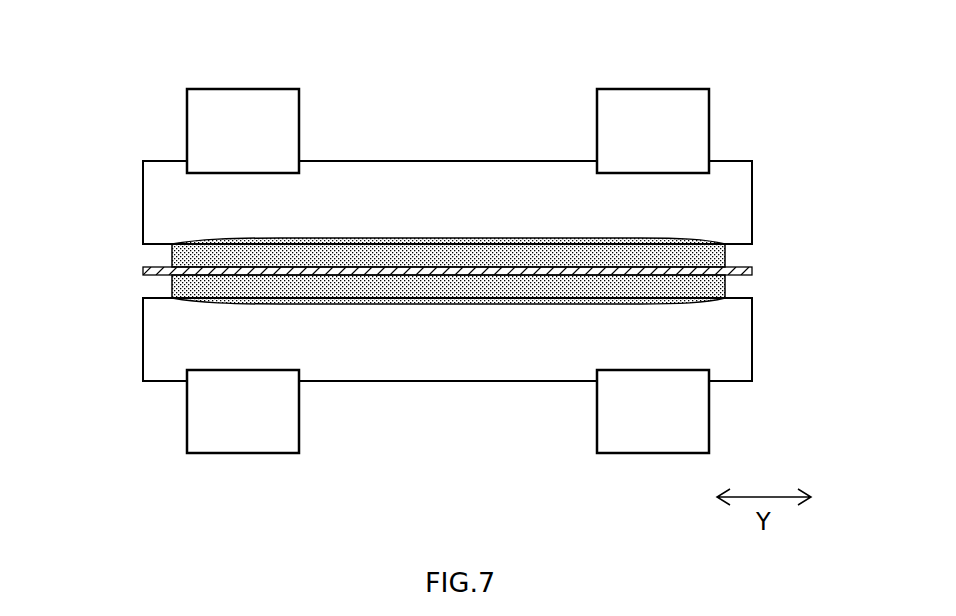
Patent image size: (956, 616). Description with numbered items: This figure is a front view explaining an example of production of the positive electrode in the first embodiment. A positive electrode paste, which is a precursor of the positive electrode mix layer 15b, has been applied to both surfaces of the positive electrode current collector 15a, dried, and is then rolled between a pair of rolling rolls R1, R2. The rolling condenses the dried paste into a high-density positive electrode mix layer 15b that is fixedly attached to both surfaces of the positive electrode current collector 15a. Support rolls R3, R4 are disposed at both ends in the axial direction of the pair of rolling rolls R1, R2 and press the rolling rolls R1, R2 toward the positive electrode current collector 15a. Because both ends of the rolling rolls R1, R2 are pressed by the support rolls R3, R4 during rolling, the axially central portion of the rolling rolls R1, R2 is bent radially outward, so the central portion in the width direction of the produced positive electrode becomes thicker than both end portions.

The rolling roll R1 is at (143, 185).
The rolling roll R2 is at (143, 357).
The support roll R3 is at (225, 89).
The support roll R4 is at (638, 89).
The positive electrode current collector 15a is at (752, 270).
The positive electrode mix layer 15b is at (172, 257).